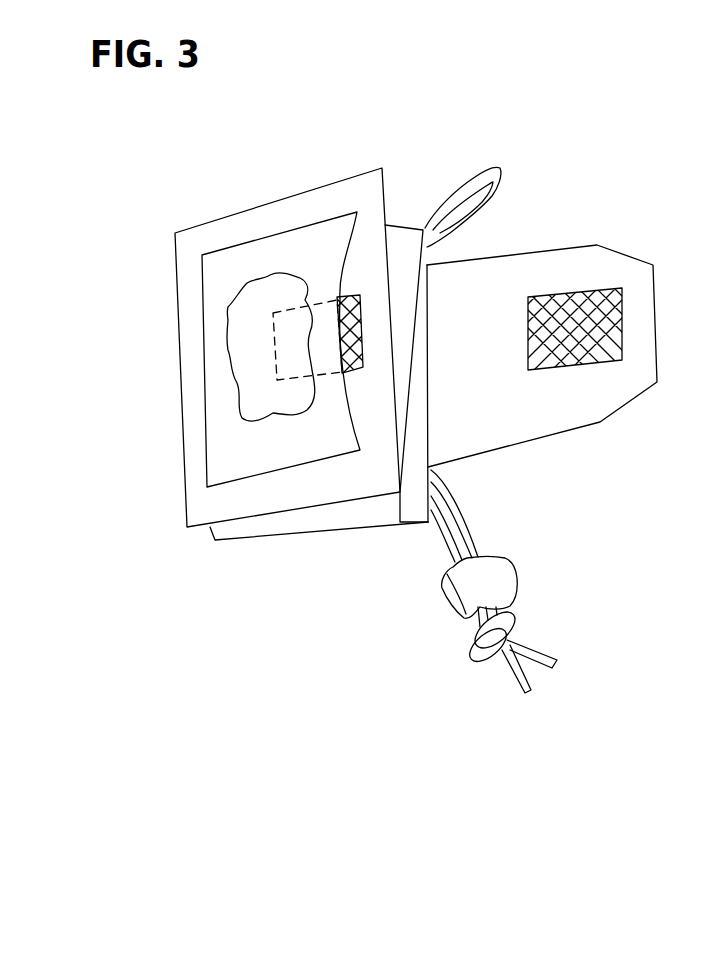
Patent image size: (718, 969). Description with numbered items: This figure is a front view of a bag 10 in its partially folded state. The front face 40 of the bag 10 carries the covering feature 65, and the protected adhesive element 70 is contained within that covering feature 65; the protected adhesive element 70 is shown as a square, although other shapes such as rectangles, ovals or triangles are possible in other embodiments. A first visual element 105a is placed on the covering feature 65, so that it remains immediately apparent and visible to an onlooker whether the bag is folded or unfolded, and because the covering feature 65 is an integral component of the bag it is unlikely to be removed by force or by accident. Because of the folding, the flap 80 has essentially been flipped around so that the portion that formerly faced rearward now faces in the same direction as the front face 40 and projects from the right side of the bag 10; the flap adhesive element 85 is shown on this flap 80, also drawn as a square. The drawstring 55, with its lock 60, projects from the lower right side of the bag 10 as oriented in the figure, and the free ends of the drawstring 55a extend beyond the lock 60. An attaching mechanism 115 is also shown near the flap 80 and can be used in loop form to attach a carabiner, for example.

The bag 10 is at (141, 447).
The front face 40 is at (202, 508).
The covering feature 65 is at (223, 287).
The first visual element 105a is at (260, 300).
The protected adhesive element 70 is at (345, 292).
The attaching mechanism 115 is at (503, 182).
The flap 80 is at (488, 422).
The flap adhesive element 85 is at (567, 350).
The drawstring 55 is at (447, 537).
The lock 60 is at (442, 605).
The cord ends 55a is at (500, 655).